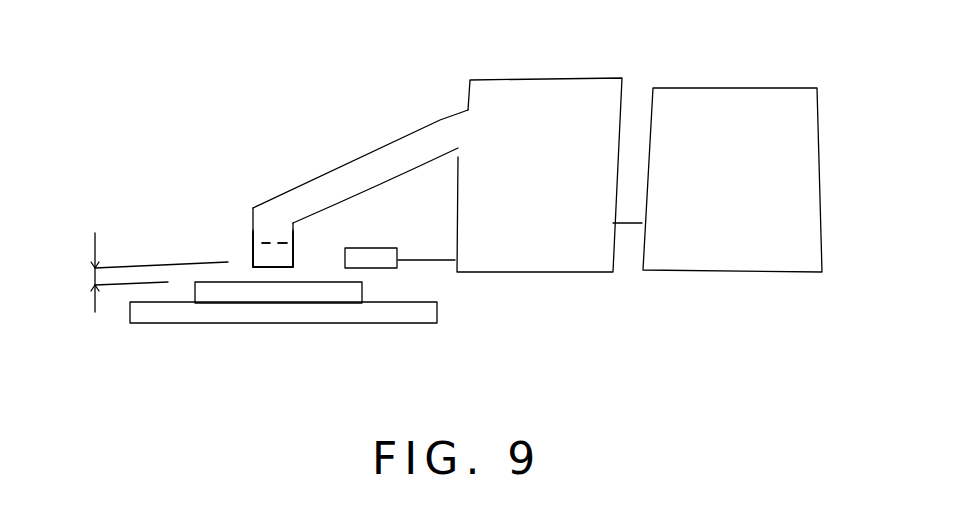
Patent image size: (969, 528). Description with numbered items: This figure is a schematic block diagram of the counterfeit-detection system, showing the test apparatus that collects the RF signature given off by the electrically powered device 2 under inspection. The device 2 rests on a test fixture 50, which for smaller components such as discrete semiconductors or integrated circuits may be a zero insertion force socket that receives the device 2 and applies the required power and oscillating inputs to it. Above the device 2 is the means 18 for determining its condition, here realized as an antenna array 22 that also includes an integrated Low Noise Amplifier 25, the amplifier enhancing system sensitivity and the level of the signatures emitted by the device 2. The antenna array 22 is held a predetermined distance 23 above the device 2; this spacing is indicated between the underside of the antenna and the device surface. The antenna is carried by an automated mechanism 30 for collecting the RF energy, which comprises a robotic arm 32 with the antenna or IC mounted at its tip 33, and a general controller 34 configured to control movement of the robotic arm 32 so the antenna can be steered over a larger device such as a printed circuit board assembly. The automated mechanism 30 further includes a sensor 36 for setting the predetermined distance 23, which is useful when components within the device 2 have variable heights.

The electrically powered device 2 is at (320, 293).
The means for determining condition 18 is at (255, 258).
The antenna array 22 is at (273, 249).
The predetermined distance 23 is at (90, 277).
The Low Noise Amplifier 25 is at (273, 250).
The automated mechanism 30 is at (520, 68).
The robotic arm 32 is at (375, 162).
The tip 33 is at (293, 243).
The general controller 34 is at (750, 260).
The sensor 36 is at (380, 253).
The test fixture 50 is at (257, 312).